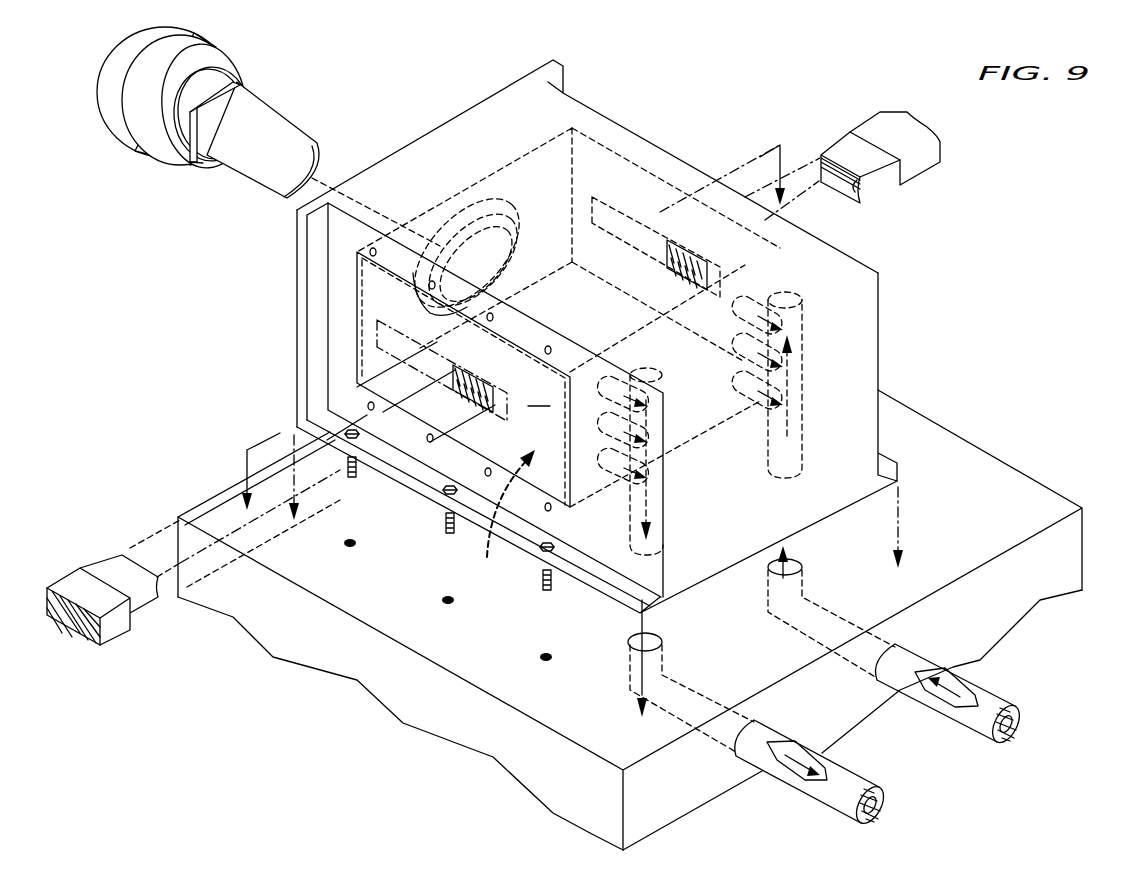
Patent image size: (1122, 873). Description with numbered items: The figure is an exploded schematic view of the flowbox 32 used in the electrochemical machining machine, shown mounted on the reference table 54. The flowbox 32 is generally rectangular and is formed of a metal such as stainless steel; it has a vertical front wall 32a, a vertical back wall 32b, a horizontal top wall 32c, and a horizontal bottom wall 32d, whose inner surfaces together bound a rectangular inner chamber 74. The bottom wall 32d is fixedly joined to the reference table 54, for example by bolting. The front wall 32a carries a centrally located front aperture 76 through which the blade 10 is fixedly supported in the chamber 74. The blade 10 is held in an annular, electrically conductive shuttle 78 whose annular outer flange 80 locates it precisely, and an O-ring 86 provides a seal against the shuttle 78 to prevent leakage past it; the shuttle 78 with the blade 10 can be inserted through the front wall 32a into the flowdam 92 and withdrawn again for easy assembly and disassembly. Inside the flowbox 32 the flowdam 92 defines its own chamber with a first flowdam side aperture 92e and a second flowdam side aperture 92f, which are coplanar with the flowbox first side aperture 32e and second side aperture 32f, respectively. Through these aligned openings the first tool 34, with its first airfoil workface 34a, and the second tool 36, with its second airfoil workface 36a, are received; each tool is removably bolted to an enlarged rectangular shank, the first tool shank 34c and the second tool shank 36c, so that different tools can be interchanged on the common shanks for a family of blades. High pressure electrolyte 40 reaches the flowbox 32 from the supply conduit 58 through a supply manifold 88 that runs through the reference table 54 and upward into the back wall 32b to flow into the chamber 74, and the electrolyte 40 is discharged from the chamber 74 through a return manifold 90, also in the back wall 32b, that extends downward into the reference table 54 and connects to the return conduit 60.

The blade 10 is at (278, 107).
The flowbox 32 is at (606, 345).
The front wall 32a is at (562, 63).
The back wall 32b is at (878, 340).
The top wall 32c is at (628, 140).
The bottom wall 32d is at (730, 566).
The first side aperture 32e is at (376, 268).
The second side aperture 32f is at (772, 268).
The first tool 34 is at (118, 566).
The first airfoil workface 34a is at (160, 597).
The first tool shank 34c is at (67, 580).
The second tool 36 is at (837, 150).
The second airfoil workface 36a is at (853, 182).
The second tool shank 36c is at (880, 122).
The electrolyte 40 is at (950, 687).
The reference table 54 is at (387, 690).
The supply conduit 58 is at (990, 697).
The return conduit 60 is at (860, 780).
The inner chamber 74 is at (539, 395).
The front aperture 76 is at (522, 221).
The shuttle 78 is at (100, 57).
The outer flange 80 is at (130, 142).
The O-ring 86 is at (512, 258).
The supply manifold 88 is at (798, 453).
The return manifold 90 is at (657, 637).
The flowdam 92 is at (506, 521).
The first flowdam side aperture 92e is at (398, 338).
The second flowdam side aperture 92f is at (628, 232).